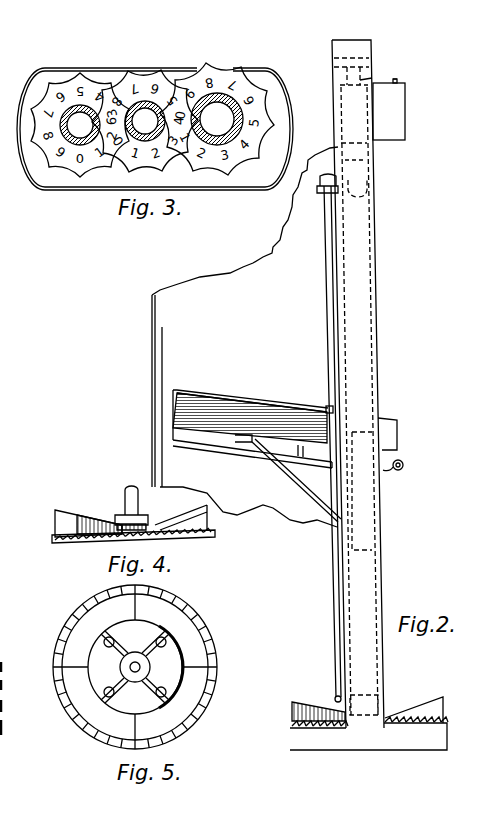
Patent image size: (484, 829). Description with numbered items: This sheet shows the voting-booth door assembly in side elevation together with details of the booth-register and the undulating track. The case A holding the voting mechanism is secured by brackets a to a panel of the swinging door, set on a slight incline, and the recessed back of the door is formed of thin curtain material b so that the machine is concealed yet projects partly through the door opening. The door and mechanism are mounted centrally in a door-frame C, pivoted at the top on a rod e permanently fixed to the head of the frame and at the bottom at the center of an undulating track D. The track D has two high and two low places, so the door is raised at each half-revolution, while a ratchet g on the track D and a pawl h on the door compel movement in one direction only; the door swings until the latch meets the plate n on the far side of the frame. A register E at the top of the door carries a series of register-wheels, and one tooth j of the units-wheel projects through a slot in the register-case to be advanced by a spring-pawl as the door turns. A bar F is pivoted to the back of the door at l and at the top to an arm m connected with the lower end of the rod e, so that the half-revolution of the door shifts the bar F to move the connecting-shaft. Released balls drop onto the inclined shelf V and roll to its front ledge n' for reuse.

In FIG. 3, the register E is at (50, 69).
In FIG. 2, the register E is at (389, 109).
In FIG. 3, the tooth of the units-wheel j is at (233, 63).
In FIG. 2, the tooth of the units-wheel j is at (398, 81).
In FIG. 2, the door-frame C is at (373, 384).
In FIG. 2, the pawl h is at (372, 78).
In FIG. 2, the rod e is at (357, 163).
In FIG. 2, the arm m is at (326, 193).
In FIG. 2, the bar F is at (325, 310).
In FIG. 2, the plate n is at (472, 347).
In FIG. 2, the curtain material b is at (157, 308).
In FIG. 2, the case A is at (285, 420).
In FIG. 2, the inclined shelf V is at (232, 450).
In FIG. 2, the brackets a is at (290, 480).
In FIG. 4, the brackets a is at (127, 493).
In FIG. 5, the brackets a is at (136, 652).
In FIG. 2, the roller N is at (403, 462).
In FIG. 2, the front ledge n' is at (417, 468).
In FIG. 2, the pivot of bar F l is at (335, 697).
In FIG. 2, the undulating track D is at (367, 693).
In FIG. 4, the undulating track D is at (55, 510).
In FIG. 5, the undulating track D is at (187, 627).
In FIG. 2, the ratchet g is at (447, 723).
In FIG. 4, the ratchet g is at (217, 537).
In FIG. 5, the ratchet g is at (212, 642).
In FIG. 2, the base C' is at (368, 749).